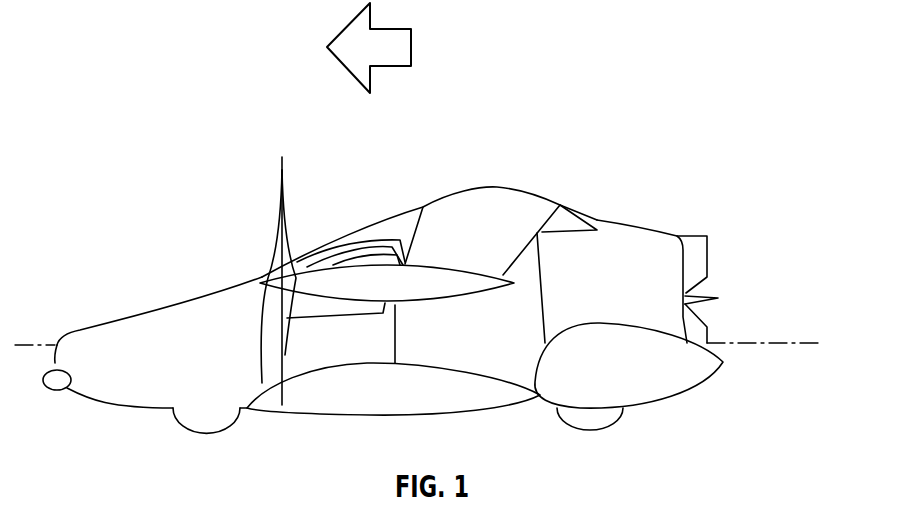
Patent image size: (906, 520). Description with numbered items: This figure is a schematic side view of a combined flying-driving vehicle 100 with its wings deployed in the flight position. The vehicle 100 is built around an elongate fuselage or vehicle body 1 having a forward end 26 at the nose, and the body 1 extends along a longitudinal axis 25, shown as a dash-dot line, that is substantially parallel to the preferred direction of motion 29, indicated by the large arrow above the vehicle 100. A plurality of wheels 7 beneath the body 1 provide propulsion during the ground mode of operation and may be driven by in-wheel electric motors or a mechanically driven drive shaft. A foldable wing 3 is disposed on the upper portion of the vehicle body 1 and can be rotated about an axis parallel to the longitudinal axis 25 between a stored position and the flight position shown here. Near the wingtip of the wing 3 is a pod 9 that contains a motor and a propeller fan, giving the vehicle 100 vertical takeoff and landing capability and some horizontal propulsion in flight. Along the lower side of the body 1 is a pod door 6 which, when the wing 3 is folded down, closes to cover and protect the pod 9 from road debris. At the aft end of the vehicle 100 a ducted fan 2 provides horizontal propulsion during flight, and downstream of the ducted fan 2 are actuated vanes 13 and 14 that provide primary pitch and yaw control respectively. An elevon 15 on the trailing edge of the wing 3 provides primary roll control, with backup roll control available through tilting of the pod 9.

The vehicle 100 is at (133, 45).
The vehicle body 1 is at (114, 392).
The ducted fan 2 is at (633, 235).
The foldable wing 3 is at (460, 213).
The pod door 6 is at (370, 398).
The wheels 7 is at (205, 420).
The wingtip pod 9 is at (340, 277).
The pitch vane 13 is at (718, 298).
The yaw vane 14 is at (707, 255).
The elevon 15 is at (538, 222).
The longitudinal axis 25 is at (780, 348).
The forward end 26 is at (84, 310).
The direction of motion 29 is at (412, 43).